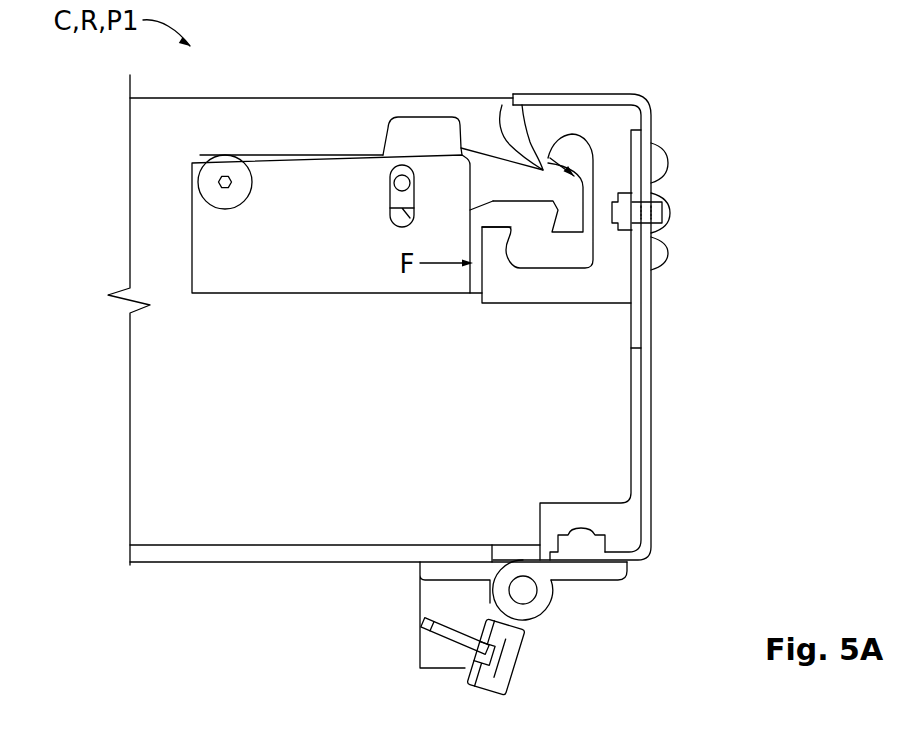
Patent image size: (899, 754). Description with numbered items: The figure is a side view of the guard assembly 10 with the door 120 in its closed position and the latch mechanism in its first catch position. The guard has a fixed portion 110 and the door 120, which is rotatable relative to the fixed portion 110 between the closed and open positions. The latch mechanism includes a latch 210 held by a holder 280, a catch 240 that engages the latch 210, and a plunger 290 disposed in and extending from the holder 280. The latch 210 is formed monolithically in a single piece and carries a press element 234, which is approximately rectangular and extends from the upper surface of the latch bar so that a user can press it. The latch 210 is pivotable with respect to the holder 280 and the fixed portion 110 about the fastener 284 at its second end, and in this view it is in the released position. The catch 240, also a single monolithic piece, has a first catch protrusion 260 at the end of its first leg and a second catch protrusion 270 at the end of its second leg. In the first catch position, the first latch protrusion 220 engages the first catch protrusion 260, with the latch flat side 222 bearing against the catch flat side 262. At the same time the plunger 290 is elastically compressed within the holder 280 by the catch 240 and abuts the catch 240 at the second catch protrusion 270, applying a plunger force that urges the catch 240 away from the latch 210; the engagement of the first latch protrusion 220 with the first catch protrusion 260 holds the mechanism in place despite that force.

The guard assembly 10 is at (90, 88).
The fixed portion 110 is at (252, 503).
The door 120 is at (653, 397).
The latch 210 is at (352, 81).
The first latch protrusion 220 is at (550, 158).
The latch flat side 222 is at (550, 158).
The press element 234 is at (432, 130).
The catch 240 is at (651, 283).
The first catch protrusion 260 is at (513, 131).
The catch flat side 262 is at (522, 105).
The second catch protrusion 270 is at (512, 249).
The holder 280 is at (203, 303).
The fastener 284 is at (217, 182).
The plunger 290 is at (476, 283).